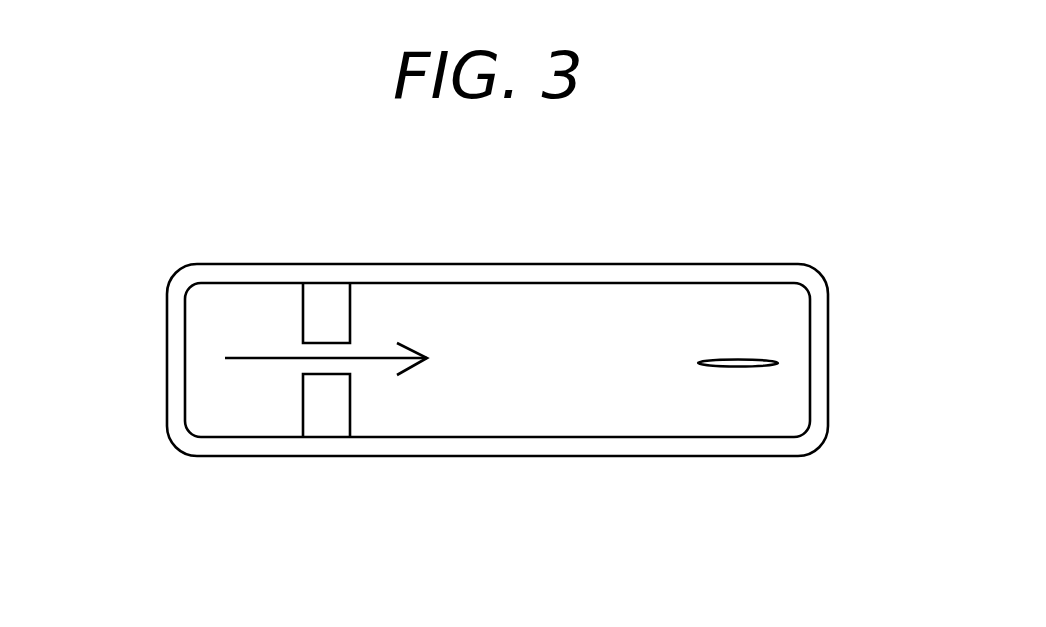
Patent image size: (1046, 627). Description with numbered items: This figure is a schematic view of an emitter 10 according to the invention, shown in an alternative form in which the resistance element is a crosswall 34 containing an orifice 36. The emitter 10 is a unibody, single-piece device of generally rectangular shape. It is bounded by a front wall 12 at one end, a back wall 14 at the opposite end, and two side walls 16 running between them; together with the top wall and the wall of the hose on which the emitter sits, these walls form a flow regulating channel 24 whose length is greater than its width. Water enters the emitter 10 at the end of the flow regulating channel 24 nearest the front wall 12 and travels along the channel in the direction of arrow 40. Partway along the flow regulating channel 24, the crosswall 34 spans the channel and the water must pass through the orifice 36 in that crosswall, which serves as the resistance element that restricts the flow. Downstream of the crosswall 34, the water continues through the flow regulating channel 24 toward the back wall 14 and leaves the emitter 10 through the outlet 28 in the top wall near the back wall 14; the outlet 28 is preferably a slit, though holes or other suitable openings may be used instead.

The emitter 10 is at (660, 152).
The front wall 12 is at (175, 365).
The back wall 14 is at (820, 372).
The side walls 16 is at (503, 278).
The flow regulating channel 24 is at (478, 397).
The outlet 28 is at (743, 360).
The crosswall 34 is at (345, 303).
The orifice 36 is at (310, 365).
The arrow 40 is at (383, 360).